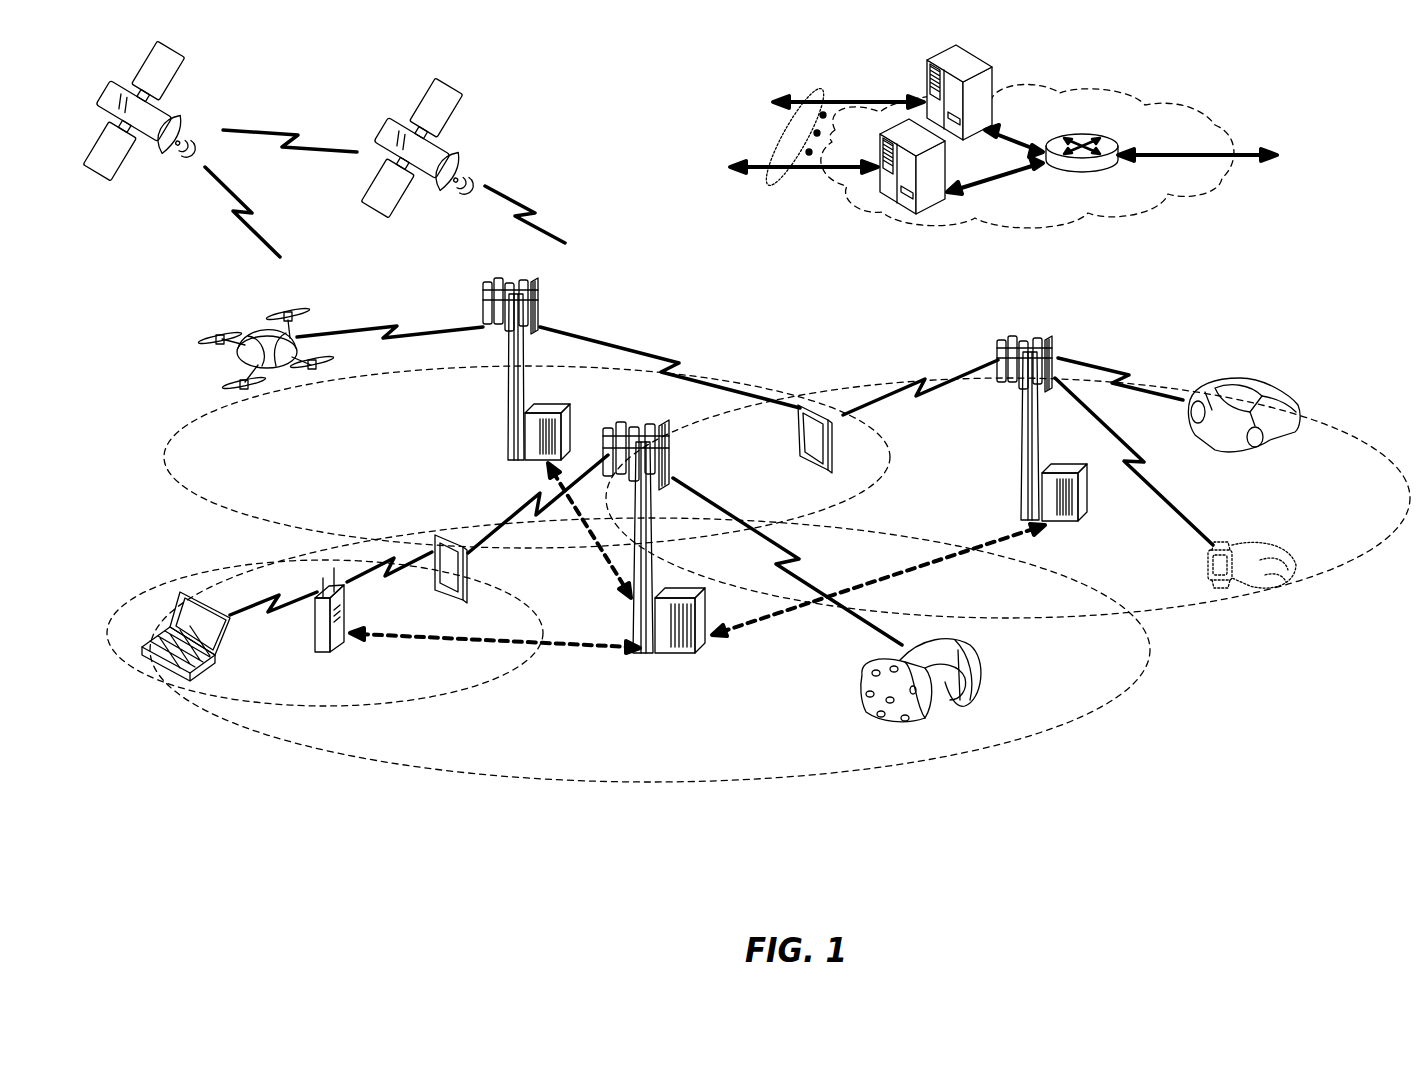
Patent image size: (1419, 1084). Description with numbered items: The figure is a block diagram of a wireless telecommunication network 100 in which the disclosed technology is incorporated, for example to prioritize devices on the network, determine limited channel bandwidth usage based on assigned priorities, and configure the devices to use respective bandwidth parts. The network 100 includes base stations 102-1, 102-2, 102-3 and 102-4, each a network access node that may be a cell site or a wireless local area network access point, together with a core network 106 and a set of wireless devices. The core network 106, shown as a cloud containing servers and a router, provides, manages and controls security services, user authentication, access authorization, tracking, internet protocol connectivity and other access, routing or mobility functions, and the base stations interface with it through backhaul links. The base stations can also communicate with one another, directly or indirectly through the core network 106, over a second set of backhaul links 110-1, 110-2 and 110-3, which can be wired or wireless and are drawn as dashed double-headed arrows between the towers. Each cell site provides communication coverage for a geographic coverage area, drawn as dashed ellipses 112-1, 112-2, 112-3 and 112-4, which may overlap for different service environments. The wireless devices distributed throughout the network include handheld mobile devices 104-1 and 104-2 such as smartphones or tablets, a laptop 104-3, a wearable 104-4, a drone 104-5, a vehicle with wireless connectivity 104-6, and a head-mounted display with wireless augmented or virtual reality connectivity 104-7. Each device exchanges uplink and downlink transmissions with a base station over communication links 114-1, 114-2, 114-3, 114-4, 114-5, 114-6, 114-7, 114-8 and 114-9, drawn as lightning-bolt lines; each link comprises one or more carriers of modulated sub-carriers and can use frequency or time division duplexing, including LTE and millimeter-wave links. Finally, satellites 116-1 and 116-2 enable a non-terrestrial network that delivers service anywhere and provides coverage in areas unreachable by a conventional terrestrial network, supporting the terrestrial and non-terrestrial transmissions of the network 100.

The wireless telecommunication network 100 is at (1352, 112).
The base station 102-1 is at (640, 662).
The base station 102-2 is at (508, 410).
The base station 102-3 is at (1022, 450).
The base station 102-4 is at (315, 632).
The handheld mobile device 104-1 is at (470, 580).
The handheld mobile device 104-2 is at (805, 445).
The laptop 104-3 is at (165, 680).
The wearable 104-4 is at (1235, 548).
The drone 104-5 is at (282, 375).
The vehicle with wireless connectivity 104-6 is at (1265, 392).
The head-mounted display 104-7 is at (975, 675).
The core network 106 is at (1113, 226).
The backhaul link 110-1 is at (390, 642).
The backhaul link 110-2 is at (950, 570).
The backhaul link 110-3 is at (600, 578).
The coverage area 112-1 is at (575, 785).
The coverage area 112-2 is at (452, 690).
The coverage area 112-3 is at (225, 522).
The coverage area 112-4 is at (1327, 432).
The communication link 114-1 is at (800, 565).
The communication link 114-2 is at (522, 512).
The communication link 114-3 is at (265, 614).
The communication link 114-4 is at (420, 588).
The communication link 114-5 is at (390, 325).
The communication link 114-6 is at (672, 360).
The communication link 114-7 is at (918, 385).
The communication link 114-8 is at (1152, 482).
The communication link 114-9 is at (1122, 372).
The satellite 116-1 is at (190, 124).
The satellite 116-2 is at (470, 160).